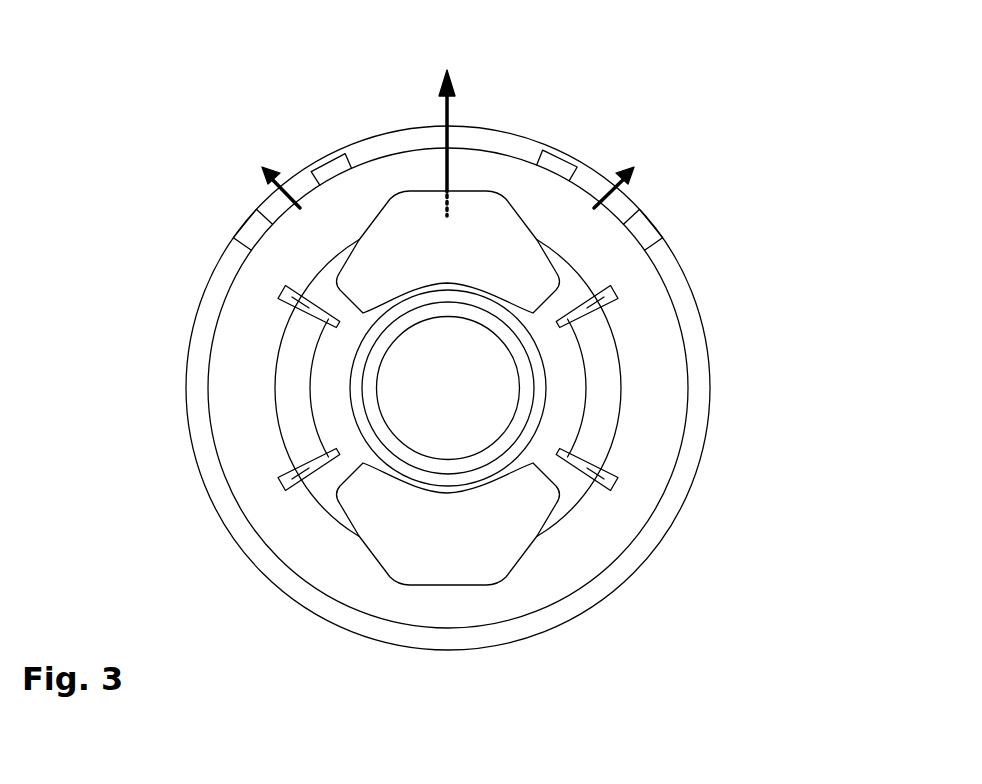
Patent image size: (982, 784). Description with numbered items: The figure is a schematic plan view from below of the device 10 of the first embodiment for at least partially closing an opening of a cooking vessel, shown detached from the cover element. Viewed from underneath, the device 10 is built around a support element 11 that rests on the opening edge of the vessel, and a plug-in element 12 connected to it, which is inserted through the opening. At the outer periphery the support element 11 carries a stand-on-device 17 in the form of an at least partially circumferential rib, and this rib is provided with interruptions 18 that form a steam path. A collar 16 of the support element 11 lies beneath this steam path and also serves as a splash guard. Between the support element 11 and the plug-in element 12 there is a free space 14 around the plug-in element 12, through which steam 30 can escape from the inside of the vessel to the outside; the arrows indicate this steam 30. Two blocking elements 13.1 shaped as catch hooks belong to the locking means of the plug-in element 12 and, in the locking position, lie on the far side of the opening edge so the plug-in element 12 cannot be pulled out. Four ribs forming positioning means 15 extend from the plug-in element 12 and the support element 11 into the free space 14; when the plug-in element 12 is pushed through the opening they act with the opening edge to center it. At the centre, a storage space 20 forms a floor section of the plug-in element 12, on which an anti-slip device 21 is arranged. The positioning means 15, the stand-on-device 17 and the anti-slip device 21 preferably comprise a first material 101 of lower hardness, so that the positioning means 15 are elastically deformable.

The device 10 is at (728, 113).
The support element 11 is at (178, 390).
The plug-in element 12 is at (562, 405).
The blocking element 13.1 is at (523, 258).
The free space 14 is at (640, 383).
The positioning means 15 is at (337, 324).
The collar 16 is at (636, 524).
The stand-on-device 17 is at (340, 154).
The interruptions 18 is at (288, 170).
The storage space 20 is at (350, 389).
The anti-slip device 21 is at (416, 462).
The steam 30 is at (450, 146).
The first material 101 is at (305, 302).